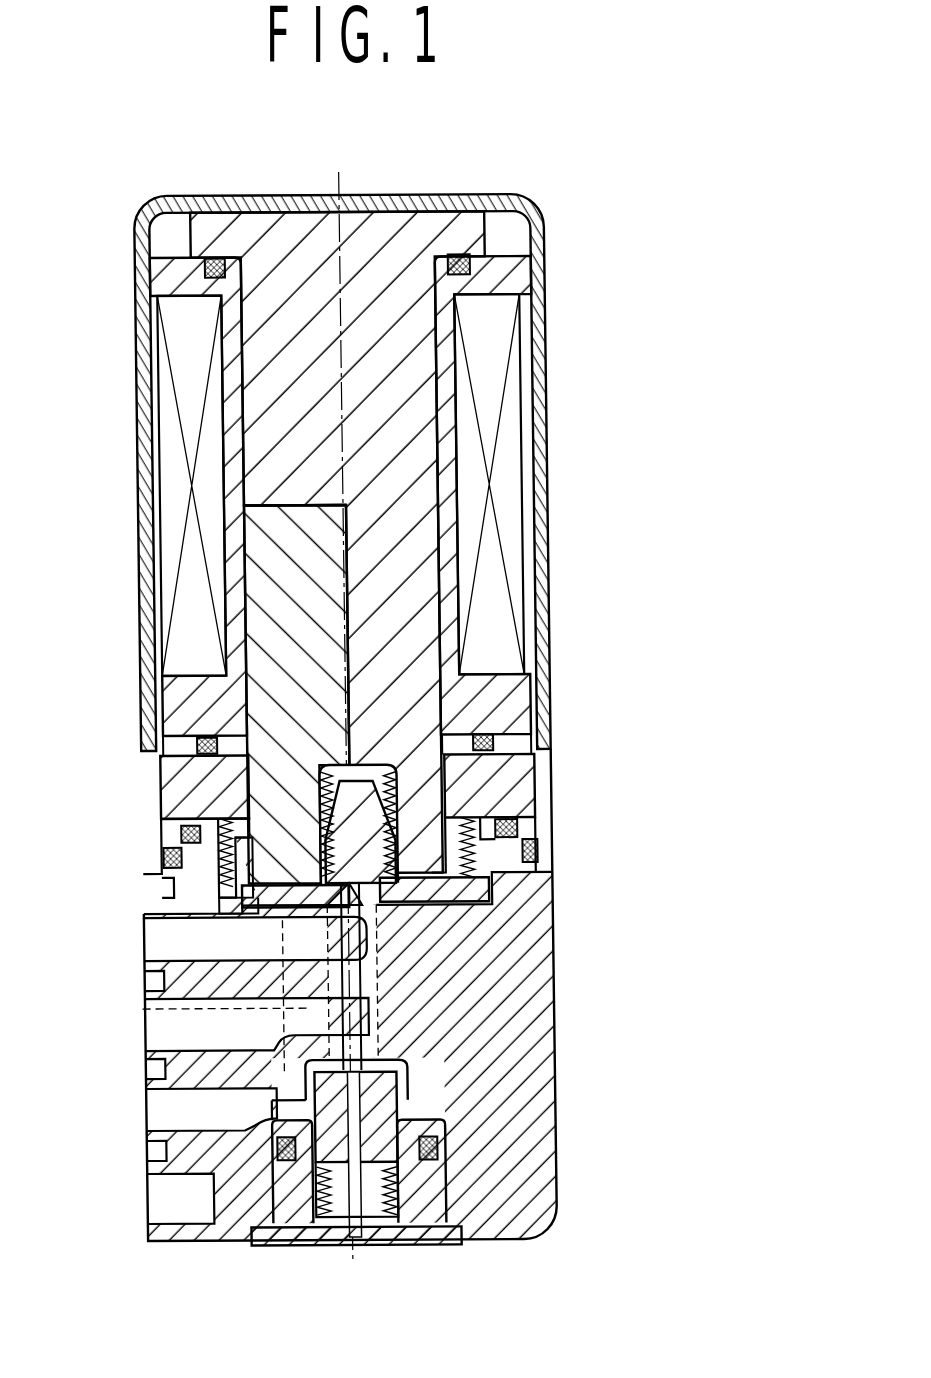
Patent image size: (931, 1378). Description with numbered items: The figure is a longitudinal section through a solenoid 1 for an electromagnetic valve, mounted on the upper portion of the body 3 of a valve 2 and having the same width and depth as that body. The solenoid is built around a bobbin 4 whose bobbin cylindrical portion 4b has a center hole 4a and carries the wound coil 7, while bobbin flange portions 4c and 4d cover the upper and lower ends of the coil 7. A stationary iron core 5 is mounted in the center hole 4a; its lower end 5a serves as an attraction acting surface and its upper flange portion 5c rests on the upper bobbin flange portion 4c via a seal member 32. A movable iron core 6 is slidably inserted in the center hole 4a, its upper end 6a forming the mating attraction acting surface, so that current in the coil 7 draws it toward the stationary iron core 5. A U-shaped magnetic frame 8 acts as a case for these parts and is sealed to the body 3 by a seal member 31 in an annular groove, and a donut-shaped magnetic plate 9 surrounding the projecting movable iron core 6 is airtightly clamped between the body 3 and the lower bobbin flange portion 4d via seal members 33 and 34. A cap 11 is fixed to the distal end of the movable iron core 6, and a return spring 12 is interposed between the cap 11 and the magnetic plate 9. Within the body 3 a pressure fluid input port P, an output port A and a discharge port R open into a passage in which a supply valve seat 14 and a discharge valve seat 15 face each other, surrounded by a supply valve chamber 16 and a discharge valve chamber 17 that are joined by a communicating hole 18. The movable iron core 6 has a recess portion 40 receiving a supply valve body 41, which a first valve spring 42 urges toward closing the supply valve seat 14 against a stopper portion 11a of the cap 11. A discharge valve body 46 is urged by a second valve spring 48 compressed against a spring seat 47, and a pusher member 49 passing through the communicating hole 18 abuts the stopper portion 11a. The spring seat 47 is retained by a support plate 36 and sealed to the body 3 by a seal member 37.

The solenoid for electromagnetic valve 1 is at (60, 299).
The valve 2 is at (549, 1187).
The body 3 is at (519, 1168).
The bobbin 4 is at (502, 244).
The center hole 4a is at (253, 385).
The bobbin cylindrical portion 4b is at (445, 441).
The bobbin flange portion 4c is at (507, 273).
The bobbin flange portion 4d is at (496, 711).
The stationary iron core 5 is at (362, 270).
The lower end 5a is at (379, 513).
The upper flange portion 5c is at (467, 231).
The movable iron core 6 is at (379, 626).
The attraction acting surface 6a is at (286, 509).
The coil 7 is at (501, 469).
The magnetic frame 8 is at (535, 349).
The magnetic plate 9 is at (502, 784).
The cap 11 is at (474, 891).
The stopper portion 11a is at (351, 906).
The return spring 12 is at (478, 869).
The supply valve seat 14 is at (342, 937).
The discharge valve seat 15 is at (285, 1095).
The supply valve chamber 16 is at (203, 870).
The discharge valve chamber 17 is at (401, 1109).
The communicating hole 18 is at (132, 1008).
The seal member 31 is at (146, 862).
The seal member 32 is at (214, 258).
The seal member 33 is at (167, 840).
The seal member 34 is at (191, 745).
The support plate 36 is at (402, 1238).
The seal member 37 is at (265, 1148).
The recess portion 40 is at (309, 804).
The supply valve body 41 is at (522, 848).
The first valve spring 42 is at (309, 788).
The discharge valve body 46 is at (355, 1100).
The spring seat 47 is at (275, 1210).
The second valve spring 48 is at (297, 1217).
The pusher member 49 is at (386, 1071).
The pressure fluid input port P is at (143, 948).
The discharge port R is at (146, 1030).
The output port A is at (150, 1118).